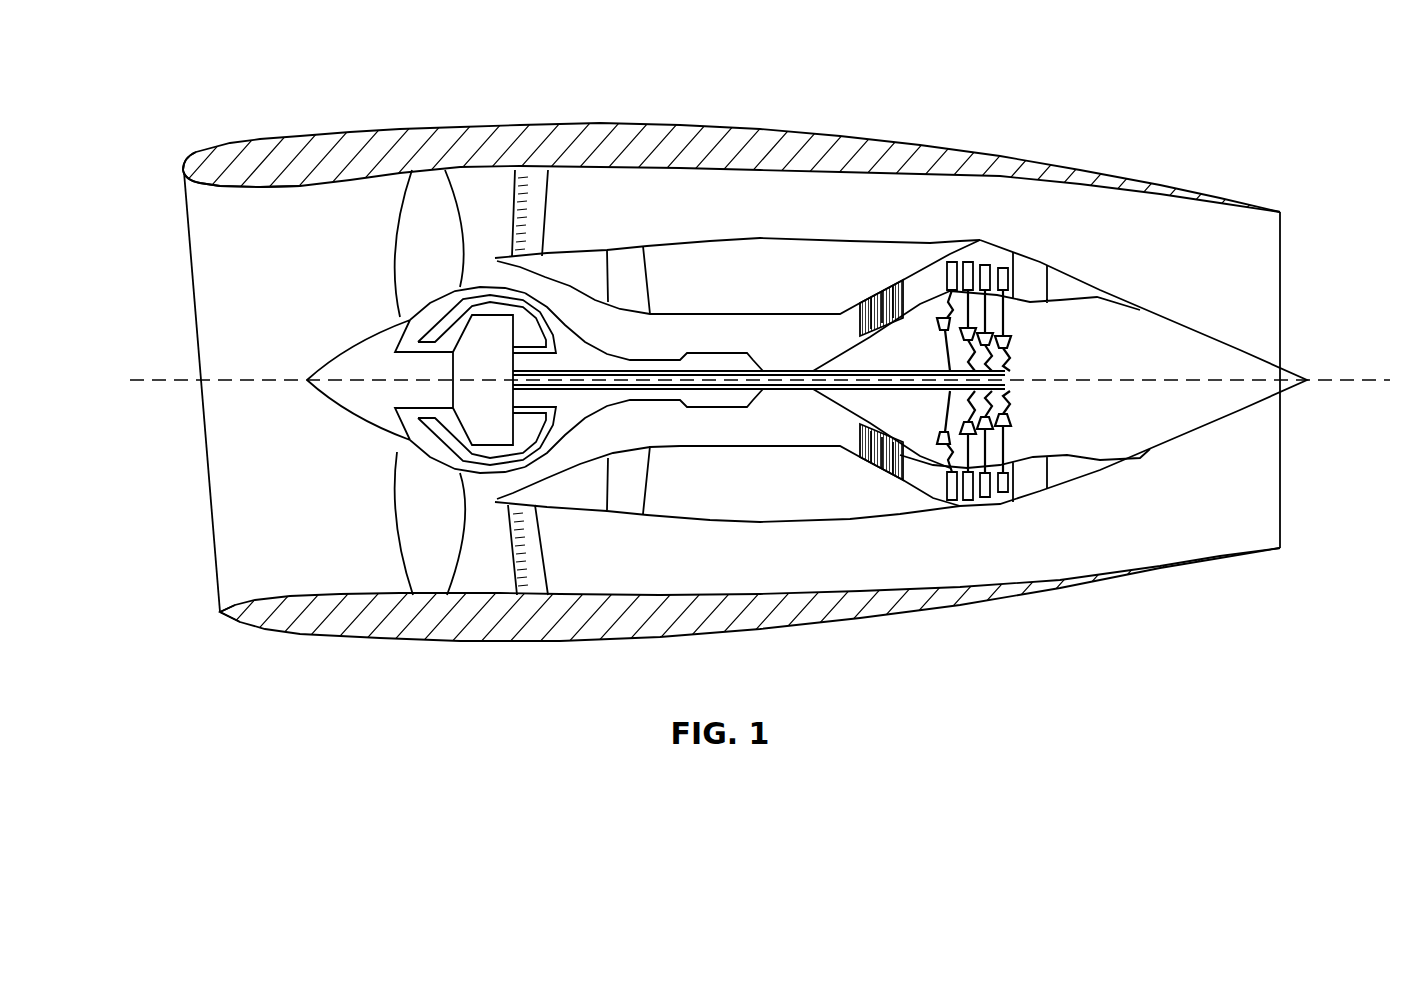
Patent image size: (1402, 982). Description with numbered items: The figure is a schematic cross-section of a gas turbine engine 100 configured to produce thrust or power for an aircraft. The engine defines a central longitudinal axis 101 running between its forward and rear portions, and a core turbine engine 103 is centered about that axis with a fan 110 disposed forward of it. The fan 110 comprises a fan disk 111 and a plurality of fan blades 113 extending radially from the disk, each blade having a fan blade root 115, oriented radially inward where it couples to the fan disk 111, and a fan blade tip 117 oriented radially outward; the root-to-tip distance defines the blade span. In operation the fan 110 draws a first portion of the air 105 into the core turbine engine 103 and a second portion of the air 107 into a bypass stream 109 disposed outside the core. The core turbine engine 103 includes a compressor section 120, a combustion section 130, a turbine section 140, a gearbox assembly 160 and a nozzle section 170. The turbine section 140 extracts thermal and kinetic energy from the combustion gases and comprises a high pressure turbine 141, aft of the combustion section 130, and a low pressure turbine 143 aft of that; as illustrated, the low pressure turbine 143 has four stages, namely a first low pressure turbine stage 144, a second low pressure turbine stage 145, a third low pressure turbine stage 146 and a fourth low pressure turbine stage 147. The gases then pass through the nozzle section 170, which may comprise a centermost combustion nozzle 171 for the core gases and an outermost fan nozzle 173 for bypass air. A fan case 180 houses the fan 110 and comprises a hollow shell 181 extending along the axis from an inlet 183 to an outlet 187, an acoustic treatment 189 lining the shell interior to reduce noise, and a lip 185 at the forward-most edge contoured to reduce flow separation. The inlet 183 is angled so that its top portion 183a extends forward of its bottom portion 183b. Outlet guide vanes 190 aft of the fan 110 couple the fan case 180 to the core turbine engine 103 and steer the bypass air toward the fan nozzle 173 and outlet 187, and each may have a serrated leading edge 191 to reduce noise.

The gas turbine engine 100 is at (190, 84).
The central longitudinal axis 101 is at (178, 380).
The core turbine engine 103 is at (733, 578).
The first portion of the air 105 is at (683, 336).
The second portion of the air 107 is at (668, 214).
The bypass stream 109 is at (688, 177).
The fan 110 is at (369, 317).
The fan disk 111 is at (337, 412).
The fan blades 113 is at (410, 510).
The fan blade root 115 is at (397, 453).
The fan blade tip 117 is at (410, 593).
The compressor section 120 is at (691, 306).
The combustion section 130 is at (801, 304).
The turbine section 140 is at (927, 250).
The high pressure turbine 141 is at (879, 280).
The low pressure turbine 143 is at (997, 250).
The first low pressure turbine stage 144 is at (948, 506).
The second low pressure turbine stage 145 is at (973, 508).
The third low pressure turbine stage 146 is at (988, 510).
The fourth low pressure turbine stage 147 is at (1004, 508).
The gearbox assembly 160 is at (493, 315).
The nozzle section 170 is at (1054, 240).
The combustion nozzle 171 is at (1088, 478).
The fan nozzle 173 is at (1053, 542).
The fan case 180 is at (305, 135).
The hollow shell 181 is at (580, 645).
The inlet 183 is at (200, 540).
The top portion of the inlet 183a is at (183, 170).
The bottom portion of the inlet 183b is at (220, 614).
The lip 185 is at (250, 187).
The outlet 187 is at (1292, 496).
The acoustic treatment 189 is at (505, 572).
The outlet guide vanes 190 is at (540, 172).
The serrated leading edge 191 is at (518, 565).